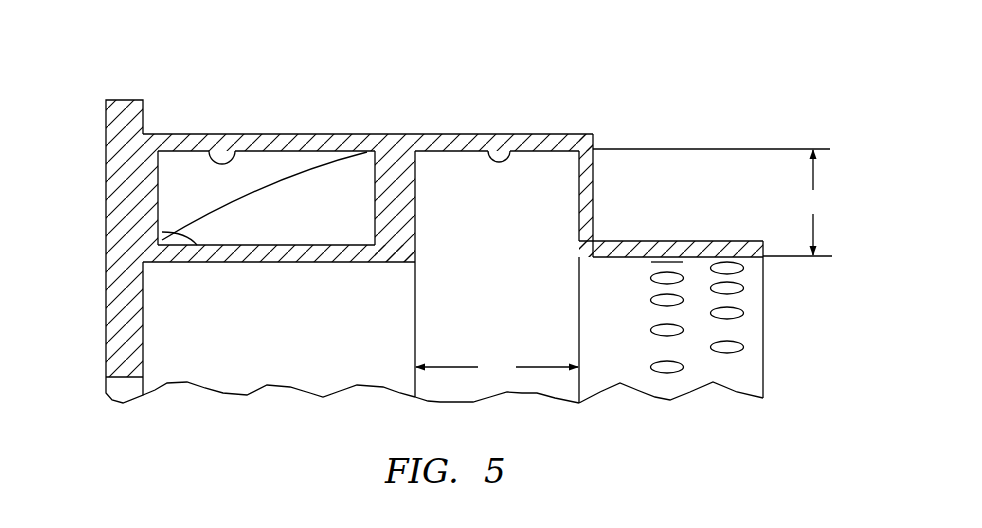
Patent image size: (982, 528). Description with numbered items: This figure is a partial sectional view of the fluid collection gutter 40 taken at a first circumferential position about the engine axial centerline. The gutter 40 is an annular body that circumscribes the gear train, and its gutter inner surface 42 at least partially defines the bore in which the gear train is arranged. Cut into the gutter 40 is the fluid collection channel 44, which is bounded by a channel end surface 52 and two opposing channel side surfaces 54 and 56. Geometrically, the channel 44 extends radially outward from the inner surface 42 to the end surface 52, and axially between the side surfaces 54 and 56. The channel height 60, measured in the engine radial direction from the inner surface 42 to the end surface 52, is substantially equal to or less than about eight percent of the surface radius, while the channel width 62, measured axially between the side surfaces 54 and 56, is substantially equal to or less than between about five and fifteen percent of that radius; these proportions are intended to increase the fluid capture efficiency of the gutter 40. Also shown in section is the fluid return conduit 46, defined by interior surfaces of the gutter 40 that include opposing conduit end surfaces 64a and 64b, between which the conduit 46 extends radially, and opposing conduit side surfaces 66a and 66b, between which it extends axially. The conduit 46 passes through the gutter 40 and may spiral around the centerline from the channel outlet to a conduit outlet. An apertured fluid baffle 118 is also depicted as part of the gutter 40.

The fluid collection gutter 40 is at (719, 106).
The gutter inner surface 42 is at (327, 263).
The fluid collection channel 44 is at (558, 186).
The fluid return conduit 46 is at (284, 192).
The channel end surface 52 is at (497, 134).
The channel side surface 54 is at (417, 240).
The channel side surface 56 is at (580, 218).
The channel height 60 is at (712, 202).
The channel width 62 is at (497, 368).
The conduit end surface 64a is at (160, 230).
The conduit end surface 64b is at (234, 150).
The conduit side surface 66a is at (158, 177).
The conduit side surface 66b is at (347, 183).
The fluid baffle 118 is at (752, 240).